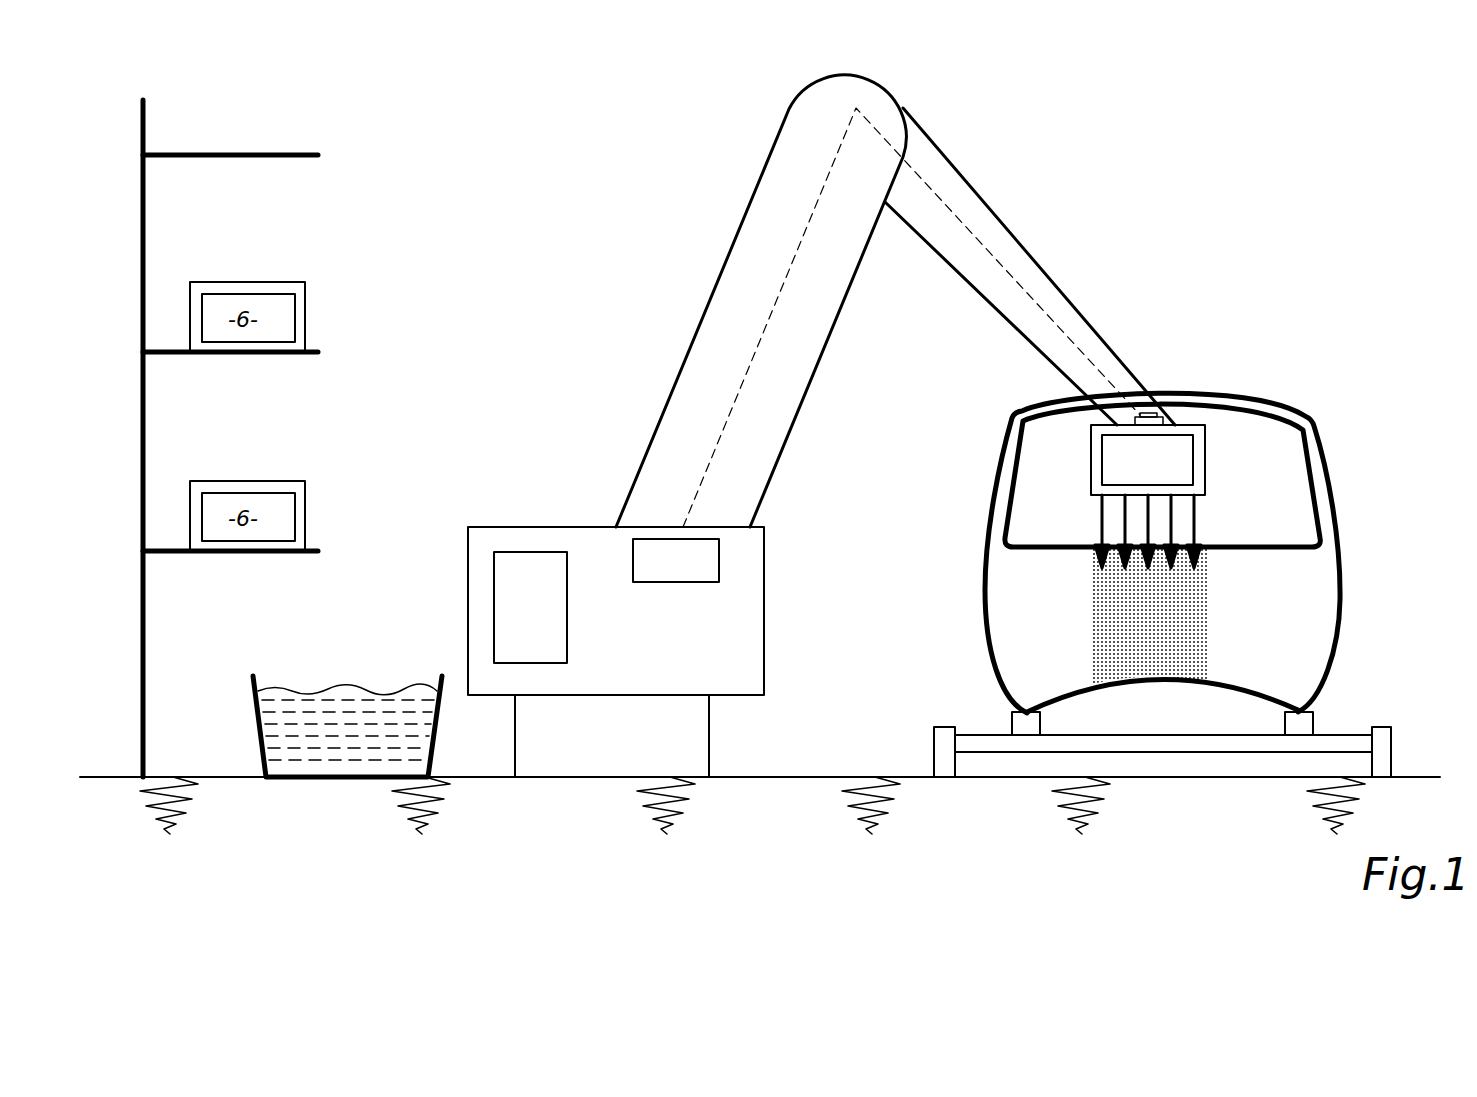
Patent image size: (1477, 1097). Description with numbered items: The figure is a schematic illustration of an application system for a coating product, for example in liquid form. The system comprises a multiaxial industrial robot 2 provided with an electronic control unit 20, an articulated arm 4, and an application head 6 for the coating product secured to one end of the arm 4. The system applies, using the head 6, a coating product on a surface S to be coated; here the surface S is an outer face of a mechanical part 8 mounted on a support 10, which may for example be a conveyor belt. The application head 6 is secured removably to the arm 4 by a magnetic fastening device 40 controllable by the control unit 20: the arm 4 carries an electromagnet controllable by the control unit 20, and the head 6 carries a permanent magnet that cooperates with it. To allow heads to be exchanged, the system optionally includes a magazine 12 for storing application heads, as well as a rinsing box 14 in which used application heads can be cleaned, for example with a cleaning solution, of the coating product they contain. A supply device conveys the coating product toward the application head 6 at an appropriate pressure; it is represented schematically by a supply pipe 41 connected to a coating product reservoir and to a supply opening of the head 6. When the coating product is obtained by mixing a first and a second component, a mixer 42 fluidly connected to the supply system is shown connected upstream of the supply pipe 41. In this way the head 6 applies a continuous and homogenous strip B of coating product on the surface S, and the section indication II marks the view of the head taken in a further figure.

The multiaxial industrial robot 2 is at (789, 426).
The articulated arm 4 is at (895, 301).
The application head 6 is at (1220, 575).
The mechanical part 8 is at (1327, 487).
The support 10 is at (977, 742).
The magazine 12 is at (325, 133).
The rinsing box 14 is at (330, 733).
The electronic control unit 20 is at (510, 565).
The magnetic fastening device 40 is at (1140, 414).
The supply pipe 41 is at (795, 250).
The mixer 42 is at (710, 563).
The surface to be coated S is at (1296, 614).
The strip of coating product B is at (1147, 636).
The section line II is at (1208, 262).